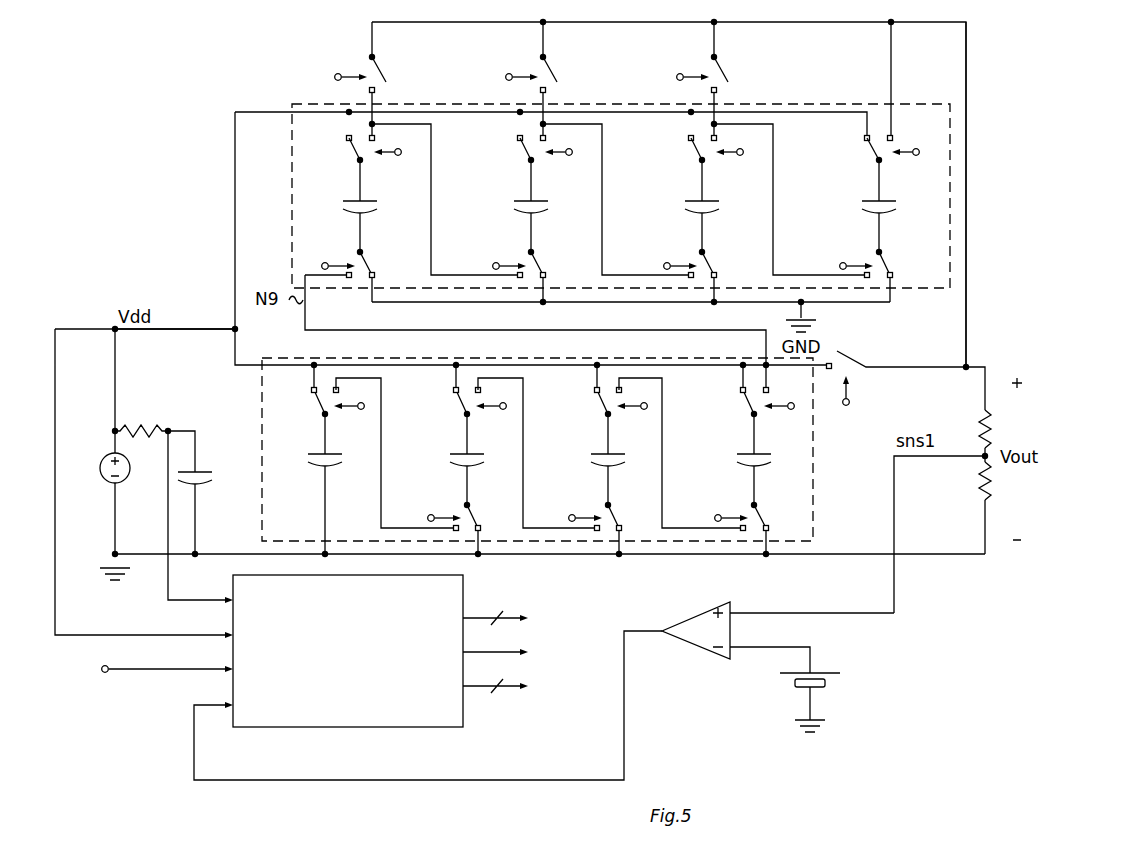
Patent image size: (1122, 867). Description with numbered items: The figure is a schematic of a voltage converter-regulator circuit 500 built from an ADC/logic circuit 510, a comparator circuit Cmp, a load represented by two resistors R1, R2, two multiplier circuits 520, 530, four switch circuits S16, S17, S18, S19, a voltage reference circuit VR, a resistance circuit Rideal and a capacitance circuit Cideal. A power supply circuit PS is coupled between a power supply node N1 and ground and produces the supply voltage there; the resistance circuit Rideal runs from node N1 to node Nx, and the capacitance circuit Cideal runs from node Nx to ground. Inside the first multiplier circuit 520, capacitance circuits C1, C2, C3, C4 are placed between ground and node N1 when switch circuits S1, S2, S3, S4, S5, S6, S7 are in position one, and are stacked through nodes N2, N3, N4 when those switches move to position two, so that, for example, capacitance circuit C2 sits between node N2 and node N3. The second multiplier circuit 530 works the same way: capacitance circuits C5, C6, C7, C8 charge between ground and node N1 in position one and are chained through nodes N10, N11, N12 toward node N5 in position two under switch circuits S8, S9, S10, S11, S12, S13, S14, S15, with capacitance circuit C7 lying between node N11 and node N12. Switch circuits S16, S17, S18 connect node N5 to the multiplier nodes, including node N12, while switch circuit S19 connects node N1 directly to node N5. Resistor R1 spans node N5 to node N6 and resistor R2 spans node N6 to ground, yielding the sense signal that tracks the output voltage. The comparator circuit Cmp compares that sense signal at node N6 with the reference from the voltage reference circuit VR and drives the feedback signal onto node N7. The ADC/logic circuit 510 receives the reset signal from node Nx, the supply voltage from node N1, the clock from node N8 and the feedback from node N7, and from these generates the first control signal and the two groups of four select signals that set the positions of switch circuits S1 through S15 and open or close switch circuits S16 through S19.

The voltage converter-regulator circuit 500 is at (1005, 131).
The ADC/logic circuit 510 is at (334, 738).
The multiplier circuit 520 is at (291, 356).
The multiplier circuit 530 is at (296, 104).
The switch circuit S1 is at (312, 405).
The switch circuit S2 is at (488, 501).
The switch circuit S3 is at (454, 405).
The switch circuit S4 is at (629, 501).
The switch circuit S5 is at (595, 405).
The switch circuit S6 is at (776, 501).
The switch circuit S7 is at (741, 405).
The switch circuit S8 is at (381, 246).
The switch circuit S9 is at (349, 150).
The switch circuit S10 is at (552, 246).
The switch circuit S11 is at (520, 150).
The switch circuit S12 is at (723, 246).
The switch circuit S13 is at (691, 150).
The switch circuit S14 is at (899, 246).
The switch circuit S15 is at (867, 150).
The switch circuit S16 is at (374, 68).
The switch circuit S17 is at (545, 68).
The switch circuit S18 is at (716, 68).
The switch circuit S19 is at (849, 348).
The capacitance circuit C1 is at (314, 455).
The capacitance circuit C2 is at (456, 455).
The capacitance circuit C3 is at (597, 455).
The capacitance circuit C4 is at (743, 455).
The capacitance circuit C5 is at (353, 201).
The capacitance circuit C6 is at (524, 201).
The capacitance circuit C7 is at (695, 201).
The capacitance circuit C8 is at (871, 201).
The power supply node N1 is at (197, 339).
The node N2 is at (385, 482).
The node N3 is at (527, 482).
The node N4 is at (666, 482).
The node N5 is at (924, 383).
The node N6 is at (838, 614).
The node N7 is at (628, 719).
The node N8 is at (163, 686).
The node N10 is at (435, 217).
The node N11 is at (606, 217).
The node N12 is at (777, 217).
The node Nx is at (164, 513).
The resistor R1 is at (980, 425).
The resistor R2 is at (974, 498).
The resistance circuit Rideal is at (147, 424).
The capacitance circuit Cideal is at (202, 474).
The power supply circuit PS is at (105, 455).
The comparator circuit Cmp is at (731, 602).
The voltage reference circuit VR is at (831, 672).